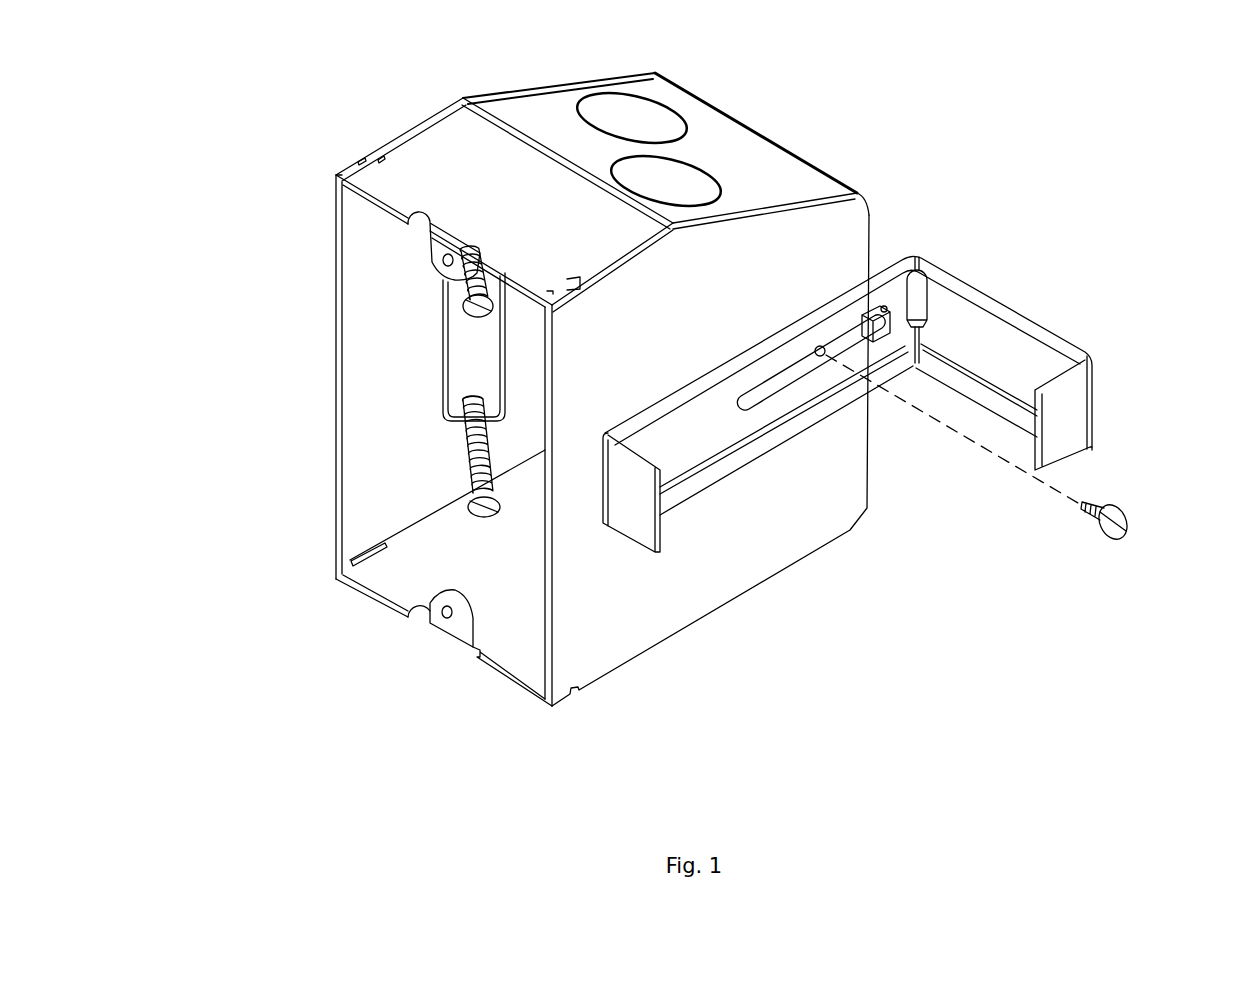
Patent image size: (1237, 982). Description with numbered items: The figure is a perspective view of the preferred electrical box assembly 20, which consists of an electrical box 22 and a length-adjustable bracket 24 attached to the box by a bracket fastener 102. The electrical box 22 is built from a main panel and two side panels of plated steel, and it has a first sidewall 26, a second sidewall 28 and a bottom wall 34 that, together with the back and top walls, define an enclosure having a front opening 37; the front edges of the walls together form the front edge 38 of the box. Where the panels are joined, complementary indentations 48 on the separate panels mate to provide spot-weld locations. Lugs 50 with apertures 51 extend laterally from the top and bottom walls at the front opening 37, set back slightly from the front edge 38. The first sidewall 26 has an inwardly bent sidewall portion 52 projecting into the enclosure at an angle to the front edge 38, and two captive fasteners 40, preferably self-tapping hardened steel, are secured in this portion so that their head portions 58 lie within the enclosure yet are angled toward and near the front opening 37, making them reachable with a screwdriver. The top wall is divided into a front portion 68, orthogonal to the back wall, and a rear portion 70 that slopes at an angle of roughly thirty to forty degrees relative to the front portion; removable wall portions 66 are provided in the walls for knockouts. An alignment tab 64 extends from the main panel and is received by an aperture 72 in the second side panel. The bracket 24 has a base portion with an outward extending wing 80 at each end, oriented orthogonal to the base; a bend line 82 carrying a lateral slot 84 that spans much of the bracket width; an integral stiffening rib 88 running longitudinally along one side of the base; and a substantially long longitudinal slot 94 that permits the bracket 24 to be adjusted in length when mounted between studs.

The electrical box assembly 20 is at (254, 195).
The electrical box 22 is at (757, 131).
The length-adjustable bracket 24 is at (1007, 297).
The first sidewall 26 is at (444, 274).
The second sidewall 28 is at (707, 460).
The bottom wall 34 is at (447, 508).
The front opening 37 is at (493, 590).
The front edge 38 is at (336, 379).
The captive fastener 40 is at (467, 278).
The complementary indentations 48 is at (373, 160).
The lug 50 is at (430, 590).
The aperture 51 is at (443, 616).
The inwardly bent sidewall portion 52 is at (467, 322).
The head portion 58 is at (478, 312).
The alignment tab 64 is at (873, 310).
The removable wall portion 66 is at (648, 149).
The front portion 68 is at (567, 163).
The rear portion 70 is at (765, 183).
The aperture 72 is at (817, 347).
The outward extending wing 80 is at (847, 454).
The bend line 82 is at (917, 256).
The lateral slot 84 is at (918, 297).
The stiffening rib 88 is at (747, 448).
The longitudinal slot 94 is at (787, 367).
The bracket fastener 102 is at (1118, 503).